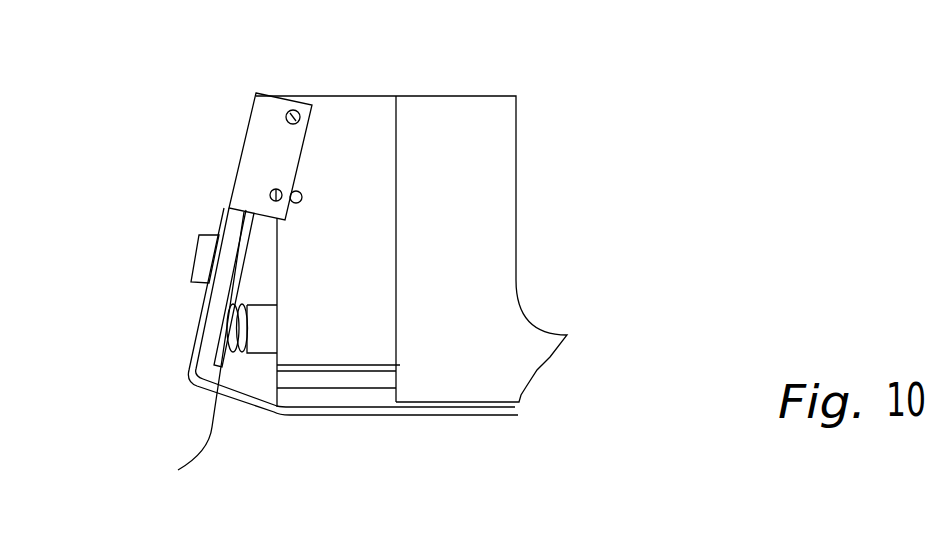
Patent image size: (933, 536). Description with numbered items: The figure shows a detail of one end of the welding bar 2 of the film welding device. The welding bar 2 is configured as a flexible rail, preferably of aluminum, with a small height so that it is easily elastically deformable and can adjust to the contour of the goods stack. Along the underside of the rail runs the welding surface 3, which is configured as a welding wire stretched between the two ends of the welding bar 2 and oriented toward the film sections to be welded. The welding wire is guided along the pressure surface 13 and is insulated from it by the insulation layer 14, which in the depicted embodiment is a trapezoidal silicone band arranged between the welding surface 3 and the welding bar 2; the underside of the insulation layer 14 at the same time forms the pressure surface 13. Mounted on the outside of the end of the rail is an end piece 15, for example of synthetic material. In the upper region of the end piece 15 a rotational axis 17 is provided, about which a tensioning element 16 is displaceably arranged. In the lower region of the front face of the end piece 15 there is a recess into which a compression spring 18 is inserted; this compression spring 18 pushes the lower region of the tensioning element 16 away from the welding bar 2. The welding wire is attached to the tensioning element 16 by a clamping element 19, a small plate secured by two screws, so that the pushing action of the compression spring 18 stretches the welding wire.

The welding bar 2 is at (546, 208).
The welding surface 3 is at (187, 372).
The pressure surface 13 is at (319, 388).
The insulation layer 14 is at (387, 383).
The end piece 15 is at (353, 140).
The tensioning element 16 is at (229, 227).
The rotational axis 17 is at (293, 104).
The compression spring 18 is at (177, 358).
The clamping element 19 is at (186, 266).